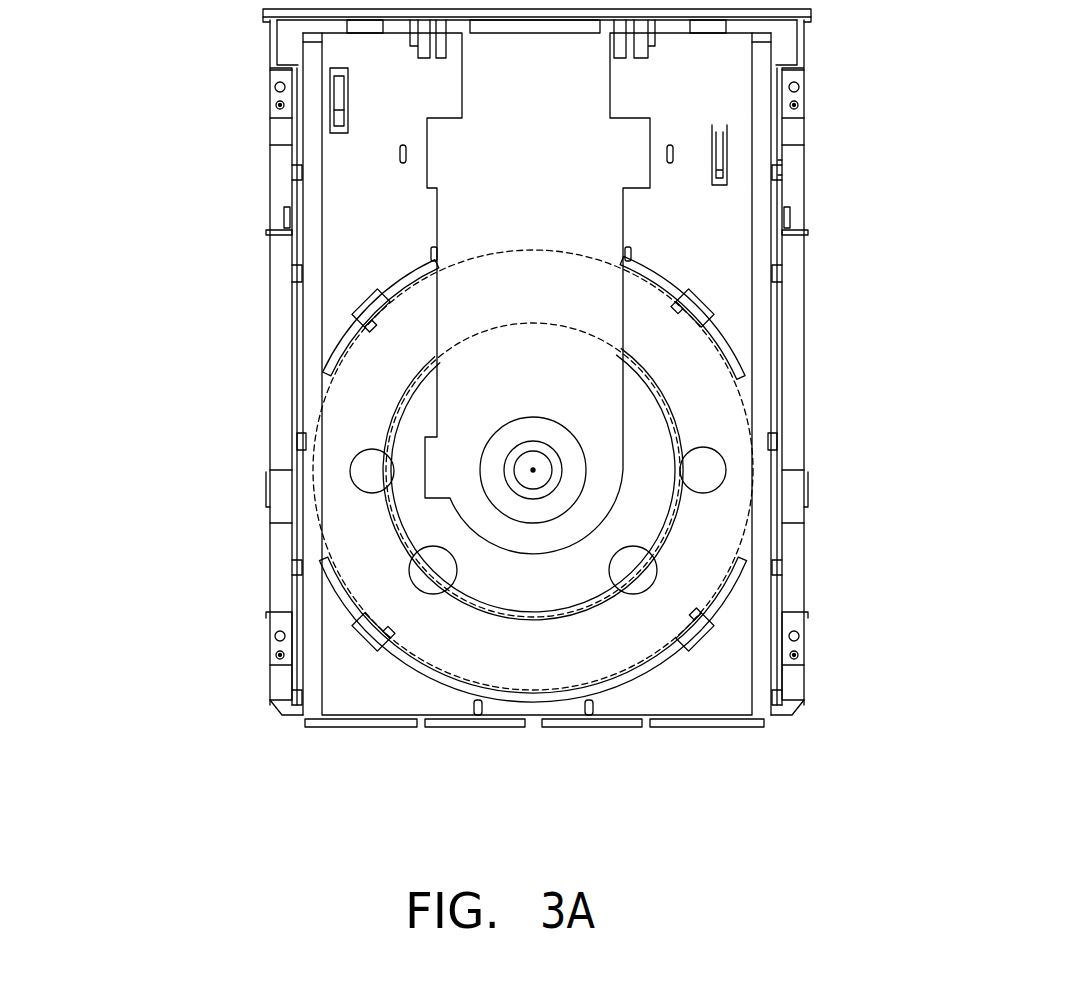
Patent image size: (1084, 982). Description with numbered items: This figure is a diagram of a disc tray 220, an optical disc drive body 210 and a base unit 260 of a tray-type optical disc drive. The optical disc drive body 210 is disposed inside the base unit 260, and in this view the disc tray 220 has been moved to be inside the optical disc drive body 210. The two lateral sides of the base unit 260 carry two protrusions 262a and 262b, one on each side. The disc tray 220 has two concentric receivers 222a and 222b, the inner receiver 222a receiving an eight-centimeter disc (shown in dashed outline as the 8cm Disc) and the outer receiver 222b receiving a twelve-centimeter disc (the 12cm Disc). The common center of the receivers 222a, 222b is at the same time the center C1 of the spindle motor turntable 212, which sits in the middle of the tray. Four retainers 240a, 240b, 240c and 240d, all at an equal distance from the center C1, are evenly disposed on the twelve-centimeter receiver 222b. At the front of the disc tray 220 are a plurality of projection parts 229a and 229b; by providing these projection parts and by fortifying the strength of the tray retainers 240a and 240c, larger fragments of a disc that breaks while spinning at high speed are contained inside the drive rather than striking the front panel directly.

The optical disc drive body 210 is at (757, 60).
The disc tray 220 is at (727, 203).
The base unit 260 is at (790, 178).
The spindle motor turntable 212 is at (570, 486).
The center C1 is at (535, 466).
The 12cm disc outline 12cm Disc is at (514, 246).
The 8cm disc outline 8cm Disc is at (498, 323).
The receiver 222a is at (408, 451).
The receiver 222b is at (383, 378).
The retainer 240a is at (360, 640).
The retainer 240b is at (362, 308).
The retainer 240c is at (708, 640).
The retainer 240d is at (706, 308).
The protrusion 262a is at (300, 435).
The protrusion 262b is at (768, 440).
The projection part 229a is at (478, 716).
The projection part 229b is at (589, 716).